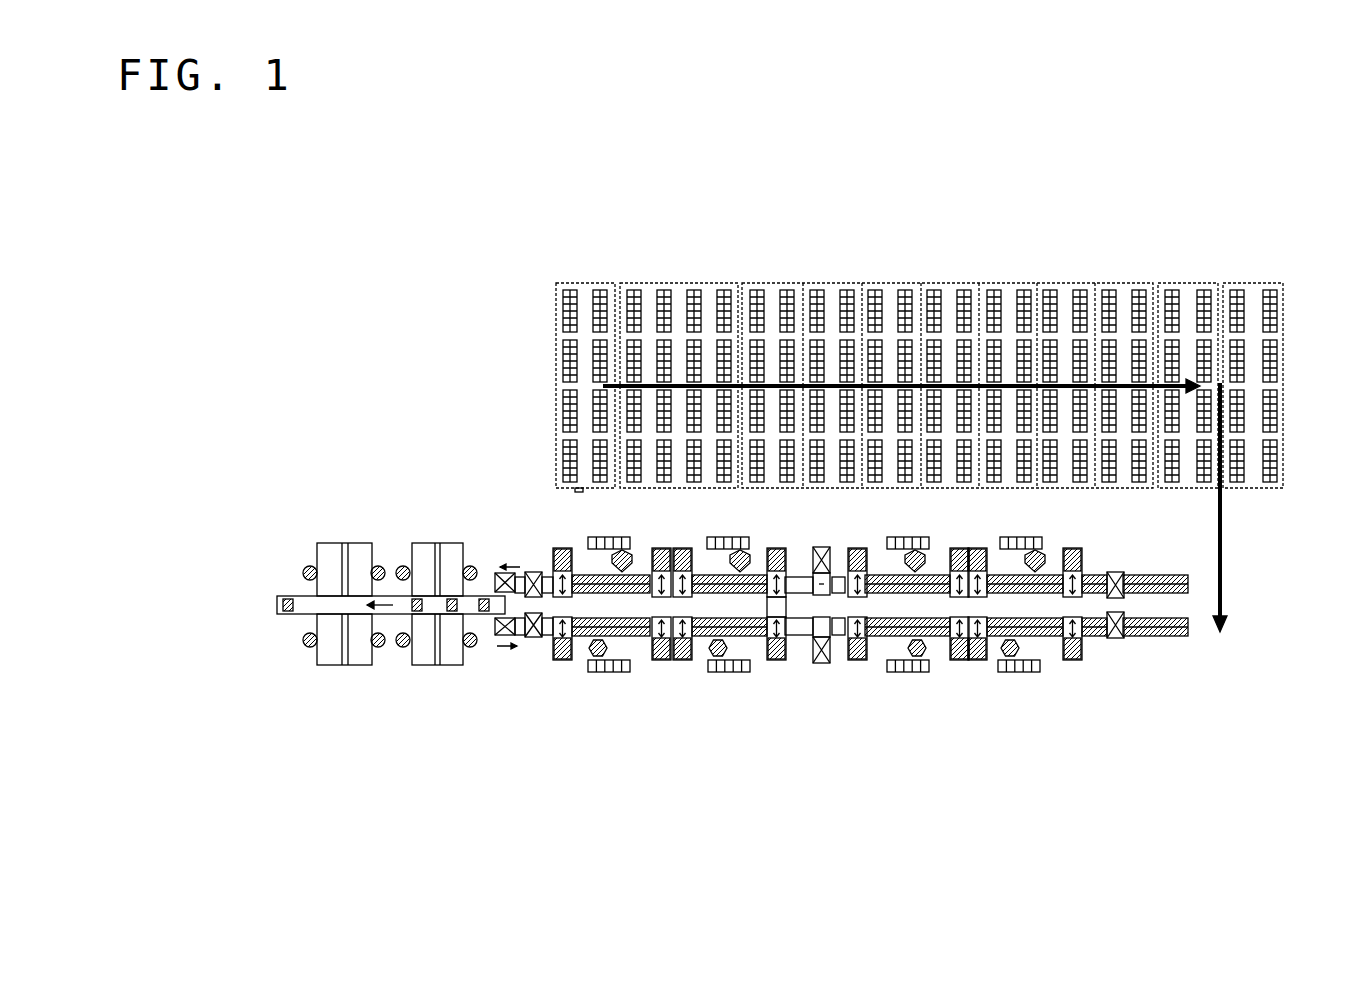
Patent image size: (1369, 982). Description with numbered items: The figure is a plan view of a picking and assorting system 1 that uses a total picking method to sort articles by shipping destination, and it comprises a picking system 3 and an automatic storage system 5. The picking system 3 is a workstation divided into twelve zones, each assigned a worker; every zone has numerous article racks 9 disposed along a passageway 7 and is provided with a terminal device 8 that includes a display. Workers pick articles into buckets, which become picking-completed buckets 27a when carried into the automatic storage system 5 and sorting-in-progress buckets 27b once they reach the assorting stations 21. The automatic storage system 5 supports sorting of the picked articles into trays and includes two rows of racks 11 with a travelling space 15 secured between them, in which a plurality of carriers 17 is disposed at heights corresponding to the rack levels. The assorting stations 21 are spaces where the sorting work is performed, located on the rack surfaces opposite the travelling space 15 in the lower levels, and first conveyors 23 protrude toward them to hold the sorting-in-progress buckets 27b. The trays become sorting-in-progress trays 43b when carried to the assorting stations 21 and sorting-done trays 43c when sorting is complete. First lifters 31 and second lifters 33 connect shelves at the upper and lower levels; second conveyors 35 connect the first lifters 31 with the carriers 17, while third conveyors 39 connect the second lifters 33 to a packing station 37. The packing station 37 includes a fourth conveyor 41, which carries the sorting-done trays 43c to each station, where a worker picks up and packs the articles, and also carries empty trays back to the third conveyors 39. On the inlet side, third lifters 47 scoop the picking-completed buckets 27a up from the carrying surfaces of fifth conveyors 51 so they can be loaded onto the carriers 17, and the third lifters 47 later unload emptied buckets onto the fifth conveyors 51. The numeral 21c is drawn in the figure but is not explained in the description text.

The picking and assorting system 1 is at (764, 197).
The picking system 3 is at (960, 237).
The automatic storage system 5 is at (686, 718).
The passageway 7 is at (592, 290).
The terminal device 8 is at (578, 493).
The article racks 9 is at (560, 300).
The racks 11 is at (705, 542).
The travelling space 15 is at (775, 598).
The carriers 17 is at (960, 605).
The assorting stations 21 is at (632, 550).
The picking station end conveyor 21c is at (1165, 575).
The first conveyors 23 is at (562, 662).
The picking-completed buckets 27a is at (1165, 637).
The sorting-in-progress buckets 27b is at (575, 640).
The first lifters 31 is at (821, 545).
The second lifters 33 is at (533, 570).
The second conveyors 35 is at (832, 583).
The packing station 37 is at (394, 522).
The third conveyors 39 is at (505, 567).
The fourth conveyor 41 is at (345, 560).
The sorting-in-progress trays 43b is at (610, 595).
The sorting-done trays 43c is at (440, 570).
The third lifters 47 is at (1113, 571).
The fifth conveyors 51 is at (1145, 575).